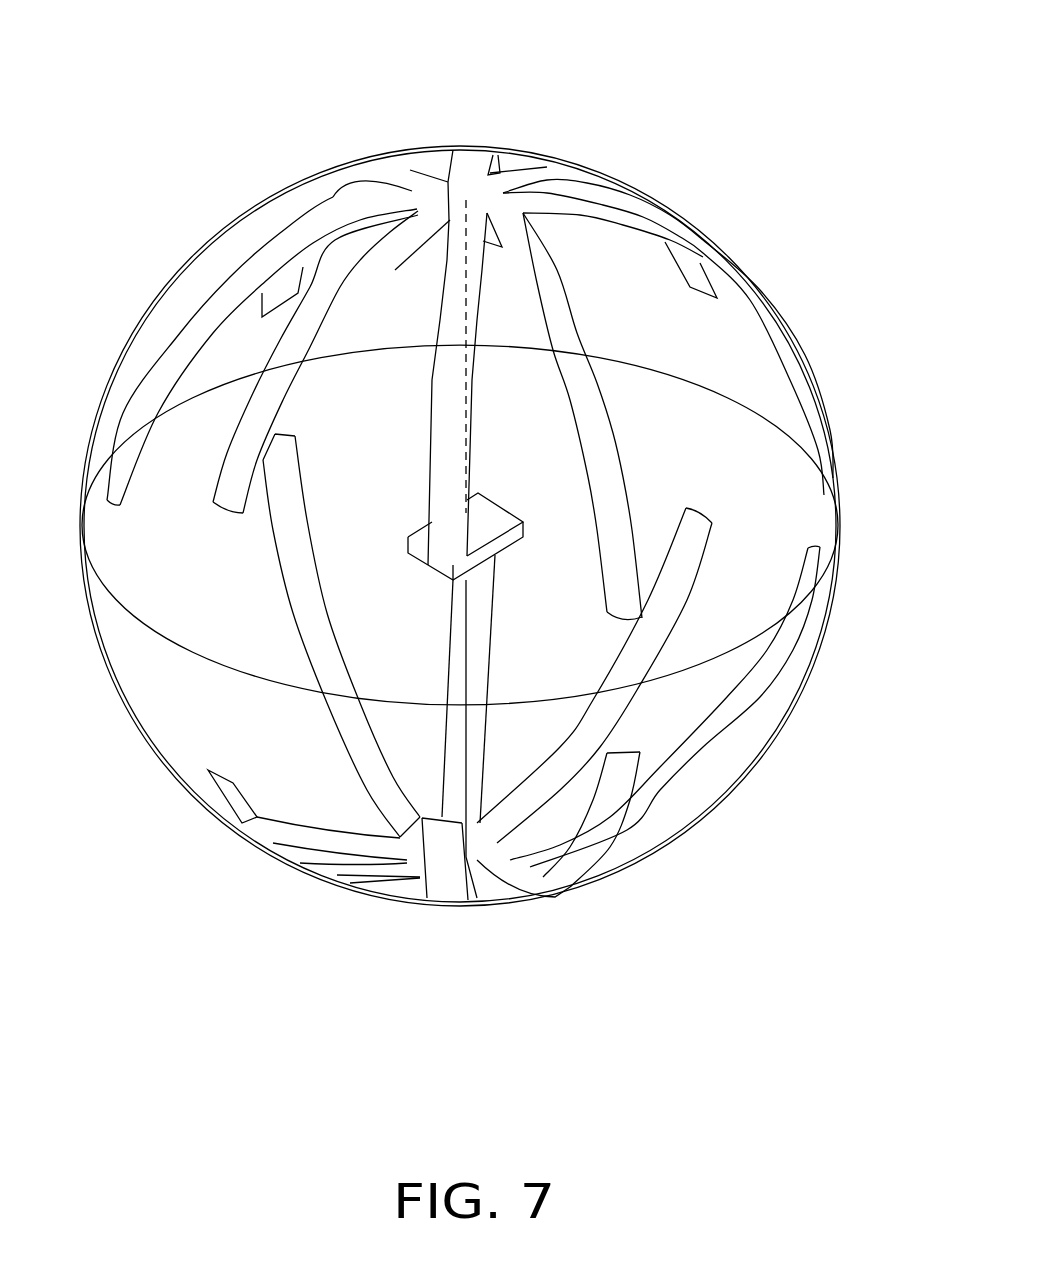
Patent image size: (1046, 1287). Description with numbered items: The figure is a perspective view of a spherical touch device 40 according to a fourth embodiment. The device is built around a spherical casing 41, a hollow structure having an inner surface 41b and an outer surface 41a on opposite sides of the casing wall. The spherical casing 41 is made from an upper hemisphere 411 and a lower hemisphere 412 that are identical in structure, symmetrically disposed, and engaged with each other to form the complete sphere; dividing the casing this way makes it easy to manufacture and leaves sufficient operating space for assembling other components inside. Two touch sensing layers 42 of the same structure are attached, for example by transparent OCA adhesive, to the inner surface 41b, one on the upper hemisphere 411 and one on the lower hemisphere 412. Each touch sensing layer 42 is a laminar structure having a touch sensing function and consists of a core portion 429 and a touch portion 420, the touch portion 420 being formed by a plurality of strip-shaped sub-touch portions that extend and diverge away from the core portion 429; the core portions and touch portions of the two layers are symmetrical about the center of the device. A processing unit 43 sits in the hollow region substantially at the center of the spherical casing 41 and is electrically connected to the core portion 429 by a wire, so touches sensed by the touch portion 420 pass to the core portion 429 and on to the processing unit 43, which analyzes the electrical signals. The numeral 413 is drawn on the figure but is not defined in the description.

The spherical touch device 40 is at (386, 49).
The spherical casing 41 is at (926, 512).
The upper hemisphere 411 is at (812, 508).
The lower hemisphere 412 is at (802, 643).
The third ring 413 is at (157, 632).
The outer surface 41a is at (800, 706).
The inner surface 41b is at (760, 757).
The touch sensing layer 42 is at (547, 177).
The touch portion 420 is at (665, 237).
The core portion 429 is at (482, 193).
The processing unit 43 is at (503, 540).